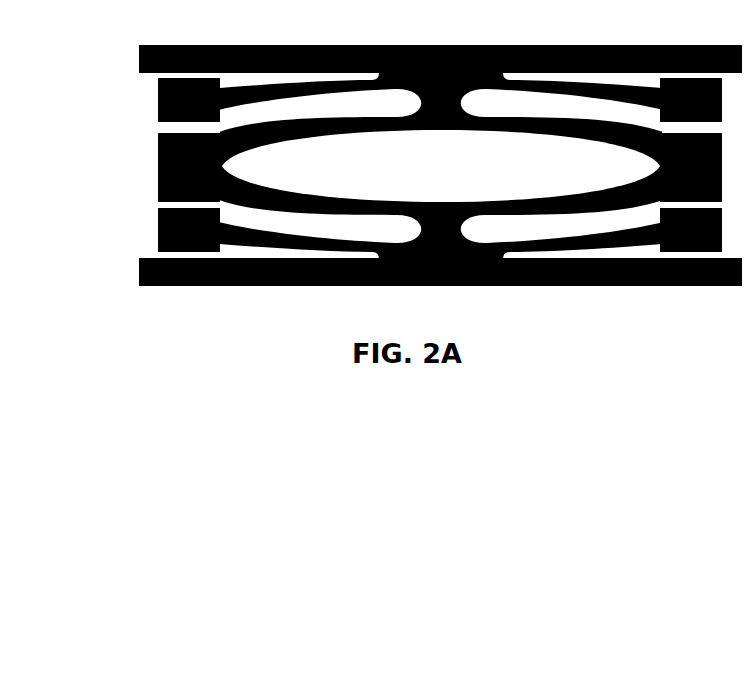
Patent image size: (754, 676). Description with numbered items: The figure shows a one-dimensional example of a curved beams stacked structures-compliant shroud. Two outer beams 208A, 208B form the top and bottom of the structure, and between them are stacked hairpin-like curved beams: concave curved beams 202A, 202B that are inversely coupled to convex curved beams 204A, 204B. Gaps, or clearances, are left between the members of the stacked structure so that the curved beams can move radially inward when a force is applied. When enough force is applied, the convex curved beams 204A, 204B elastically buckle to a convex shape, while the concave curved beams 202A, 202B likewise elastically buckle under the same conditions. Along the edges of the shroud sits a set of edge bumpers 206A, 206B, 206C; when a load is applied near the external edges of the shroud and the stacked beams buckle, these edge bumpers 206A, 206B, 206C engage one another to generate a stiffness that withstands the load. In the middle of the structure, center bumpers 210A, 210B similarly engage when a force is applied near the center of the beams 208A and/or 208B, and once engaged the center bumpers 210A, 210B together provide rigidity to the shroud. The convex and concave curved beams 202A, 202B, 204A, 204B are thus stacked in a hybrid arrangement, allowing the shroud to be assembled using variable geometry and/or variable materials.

The concave curved beam 202A is at (577, 98).
The concave curved beam 202B is at (518, 133).
The convex curved beam 204A is at (322, 198).
The convex curved beam 204B is at (288, 234).
The edge bumper 206A is at (158, 101).
The edge bumper 206B is at (158, 161).
The edge bumper 206C is at (158, 228).
The beam 208A is at (429, 46).
The beam 208B is at (450, 287).
The center bumper 210A is at (439, 130).
The center bumper 210B is at (448, 205).